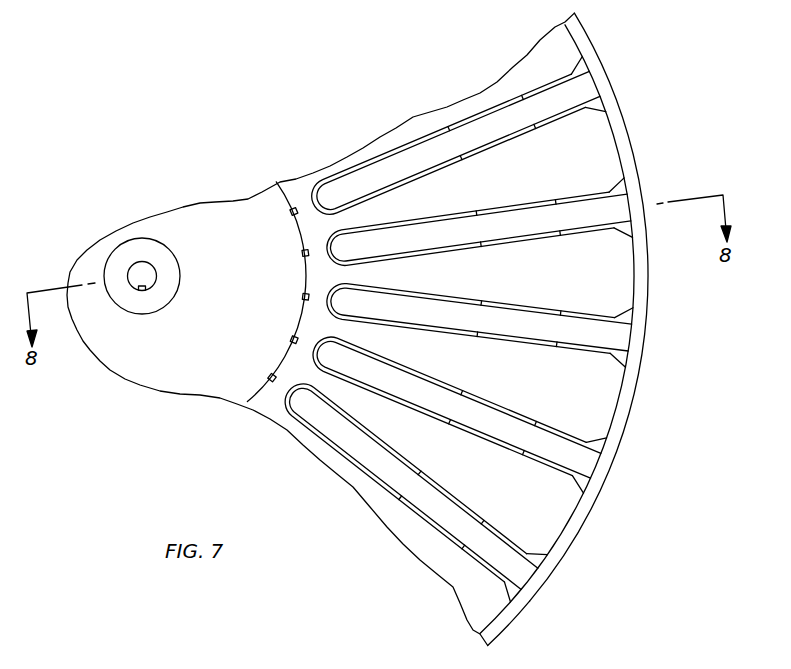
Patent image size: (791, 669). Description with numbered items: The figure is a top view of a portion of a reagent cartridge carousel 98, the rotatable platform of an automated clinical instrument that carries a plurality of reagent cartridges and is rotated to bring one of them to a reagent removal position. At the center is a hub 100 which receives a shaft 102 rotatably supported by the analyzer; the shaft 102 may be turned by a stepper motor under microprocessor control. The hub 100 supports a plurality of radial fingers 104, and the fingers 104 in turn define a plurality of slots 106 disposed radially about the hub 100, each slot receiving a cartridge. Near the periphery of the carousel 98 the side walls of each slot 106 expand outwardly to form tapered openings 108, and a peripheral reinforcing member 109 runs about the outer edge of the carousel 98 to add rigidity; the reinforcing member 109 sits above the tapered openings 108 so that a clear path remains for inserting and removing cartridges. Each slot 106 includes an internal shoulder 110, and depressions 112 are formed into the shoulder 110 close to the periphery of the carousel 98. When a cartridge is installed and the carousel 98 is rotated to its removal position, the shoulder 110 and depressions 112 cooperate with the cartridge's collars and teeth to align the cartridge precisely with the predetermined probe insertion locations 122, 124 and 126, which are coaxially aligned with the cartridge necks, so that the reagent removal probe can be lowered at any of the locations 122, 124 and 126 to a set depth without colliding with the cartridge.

The reagent cartridge carousel 98 is at (206, 331).
The central hub 100 is at (250, 199).
The shaft 102 is at (151, 262).
The radial fingers 104 is at (605, 403).
The slots 106 is at (611, 338).
The tapered openings 108 is at (617, 315).
The peripheral reinforcing member 109 is at (542, 588).
The internal shoulder 110 is at (417, 148).
The depressions 112 is at (571, 344).
The probe insertion location 122 is at (334, 357).
The probe insertion location 124 is at (390, 376).
The probe insertion location 126 is at (442, 404).